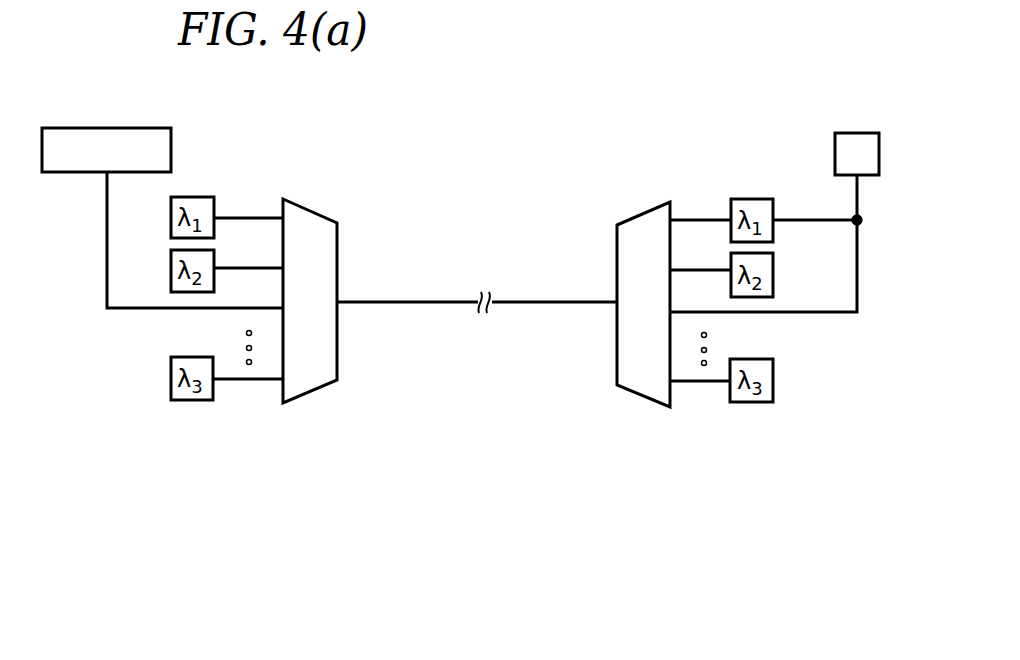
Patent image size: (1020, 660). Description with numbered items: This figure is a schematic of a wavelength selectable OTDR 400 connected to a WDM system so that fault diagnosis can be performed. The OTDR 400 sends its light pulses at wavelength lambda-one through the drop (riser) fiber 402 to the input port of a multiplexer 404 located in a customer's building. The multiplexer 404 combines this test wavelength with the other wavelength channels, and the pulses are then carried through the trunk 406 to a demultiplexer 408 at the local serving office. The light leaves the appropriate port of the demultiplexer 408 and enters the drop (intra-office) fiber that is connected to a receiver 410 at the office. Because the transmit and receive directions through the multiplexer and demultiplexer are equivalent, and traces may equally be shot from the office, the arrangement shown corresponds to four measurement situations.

The wavelength selectable OTDR 400 is at (105, 128).
The drop (riser) fiber 402 is at (105, 239).
The multiplexer 404 is at (323, 213).
The trunk 406 is at (460, 300).
The demultiplexer 408 is at (645, 211).
The receiver 410 is at (855, 132).